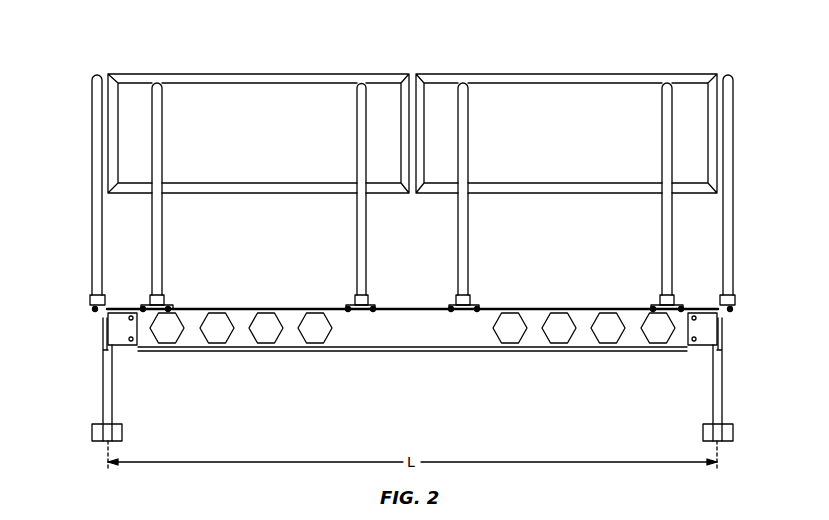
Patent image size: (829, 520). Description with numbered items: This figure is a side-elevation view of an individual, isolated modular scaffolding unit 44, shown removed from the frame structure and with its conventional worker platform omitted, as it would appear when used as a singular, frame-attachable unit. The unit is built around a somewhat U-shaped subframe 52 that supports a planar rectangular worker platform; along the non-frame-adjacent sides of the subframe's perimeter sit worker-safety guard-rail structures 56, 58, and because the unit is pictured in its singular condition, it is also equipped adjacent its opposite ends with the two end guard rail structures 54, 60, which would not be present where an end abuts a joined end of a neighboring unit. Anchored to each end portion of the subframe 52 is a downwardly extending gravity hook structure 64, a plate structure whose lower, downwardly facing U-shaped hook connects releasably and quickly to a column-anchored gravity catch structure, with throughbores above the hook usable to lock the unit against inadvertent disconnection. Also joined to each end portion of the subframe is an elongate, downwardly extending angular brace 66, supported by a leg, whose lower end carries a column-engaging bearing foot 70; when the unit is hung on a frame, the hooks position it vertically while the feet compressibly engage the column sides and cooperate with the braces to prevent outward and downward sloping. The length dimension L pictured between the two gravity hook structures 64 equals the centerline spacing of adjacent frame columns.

The scaffolding unit 44 is at (166, 54).
The subframe 52 is at (251, 308).
The guard rail structure 54 is at (92, 132).
The guard rail structure 56 is at (260, 80).
The guard rail structure 58 is at (567, 78).
The guard rail structure 60 is at (734, 245).
The gravity hook structure 64 is at (105, 350).
The angular brace 66 is at (107, 393).
The bearing foot 70 is at (118, 433).